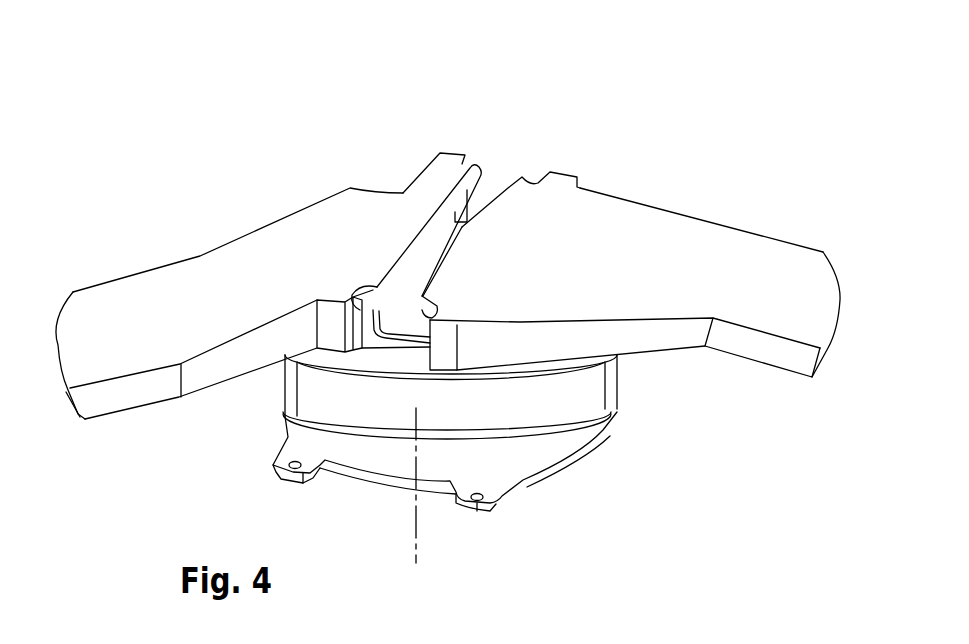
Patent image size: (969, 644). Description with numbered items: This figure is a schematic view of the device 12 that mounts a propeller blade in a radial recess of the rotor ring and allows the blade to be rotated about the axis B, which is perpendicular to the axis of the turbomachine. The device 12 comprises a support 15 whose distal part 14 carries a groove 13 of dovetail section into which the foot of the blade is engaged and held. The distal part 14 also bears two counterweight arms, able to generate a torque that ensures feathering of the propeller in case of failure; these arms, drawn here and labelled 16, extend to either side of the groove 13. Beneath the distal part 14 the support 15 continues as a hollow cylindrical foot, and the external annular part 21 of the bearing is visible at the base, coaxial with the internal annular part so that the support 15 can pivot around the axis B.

The device 12 is at (609, 150).
The groove 13 is at (502, 172).
The distal part 14 is at (430, 157).
The support 15 is at (430, 177).
The blade wing 16 is at (225, 268).
The external annular part 21 is at (546, 440).
The axis B is at (416, 535).